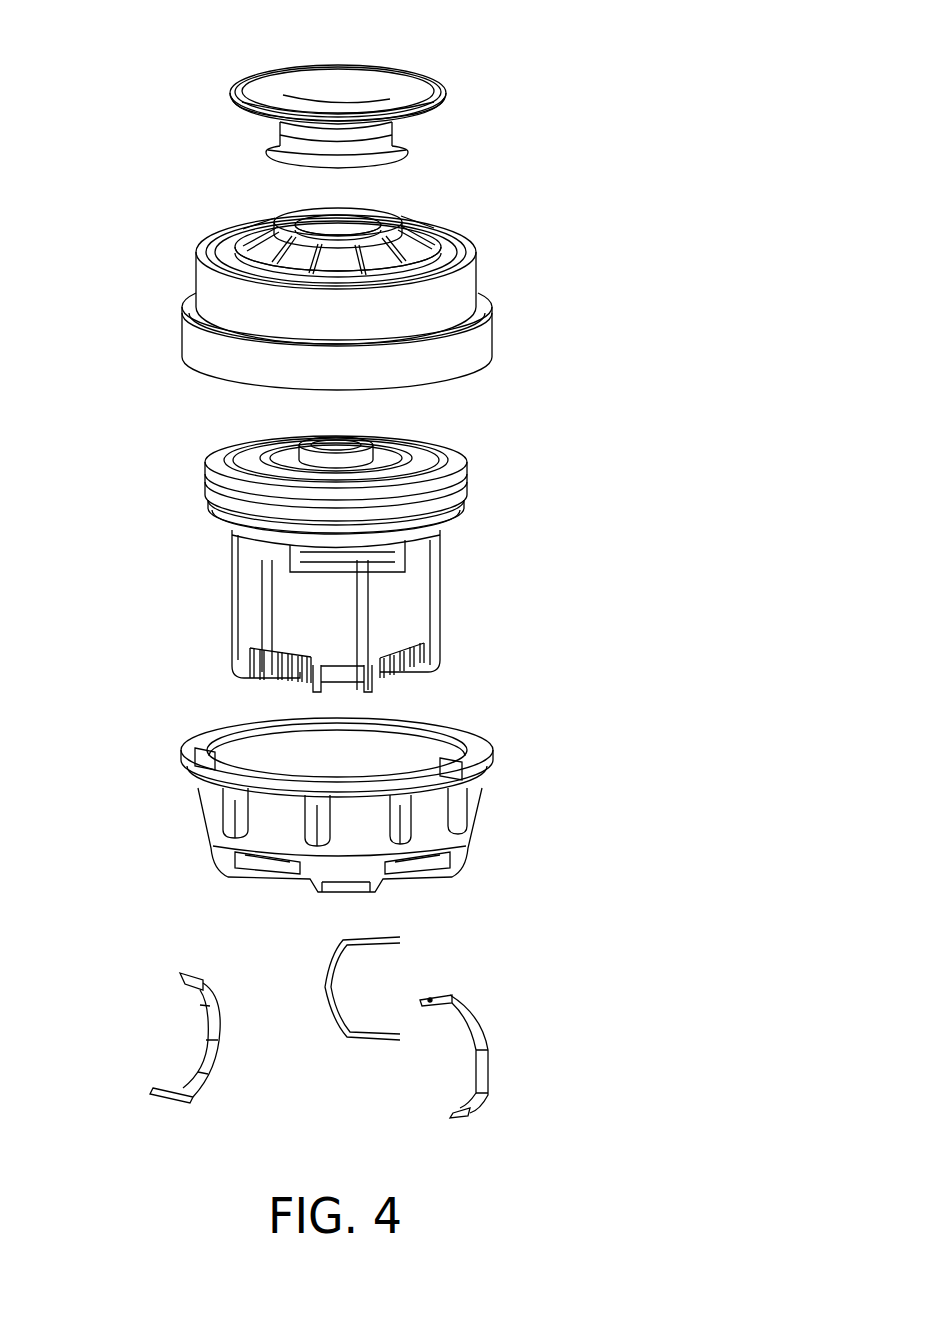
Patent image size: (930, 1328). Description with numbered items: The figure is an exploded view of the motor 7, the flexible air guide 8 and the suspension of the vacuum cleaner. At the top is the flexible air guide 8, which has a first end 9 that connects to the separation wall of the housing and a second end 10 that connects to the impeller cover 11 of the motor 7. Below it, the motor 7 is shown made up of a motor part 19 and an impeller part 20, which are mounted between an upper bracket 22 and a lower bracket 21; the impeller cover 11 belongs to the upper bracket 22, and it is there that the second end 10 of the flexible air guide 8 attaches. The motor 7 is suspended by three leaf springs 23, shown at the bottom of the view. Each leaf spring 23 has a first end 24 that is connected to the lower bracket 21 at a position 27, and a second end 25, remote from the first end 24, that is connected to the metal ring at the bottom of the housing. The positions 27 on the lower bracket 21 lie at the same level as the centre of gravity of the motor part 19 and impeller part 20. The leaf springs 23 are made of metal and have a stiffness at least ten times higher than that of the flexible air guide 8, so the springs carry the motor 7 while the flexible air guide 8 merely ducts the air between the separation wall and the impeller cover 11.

The motor 7 is at (612, 648).
The flexible air guide 8 is at (405, 88).
The first end 9 is at (440, 92).
The second end 10 is at (400, 148).
The impeller cover 11 is at (290, 218).
The upper bracket 22 is at (376, 276).
The impeller part 20 is at (460, 490).
The motor part 19 is at (418, 593).
The lower bracket 21 is at (329, 805).
The position 27 is at (195, 758).
The leaf spring 23 is at (319, 1027).
The first end 24 is at (430, 997).
The second end 25 is at (155, 1092).